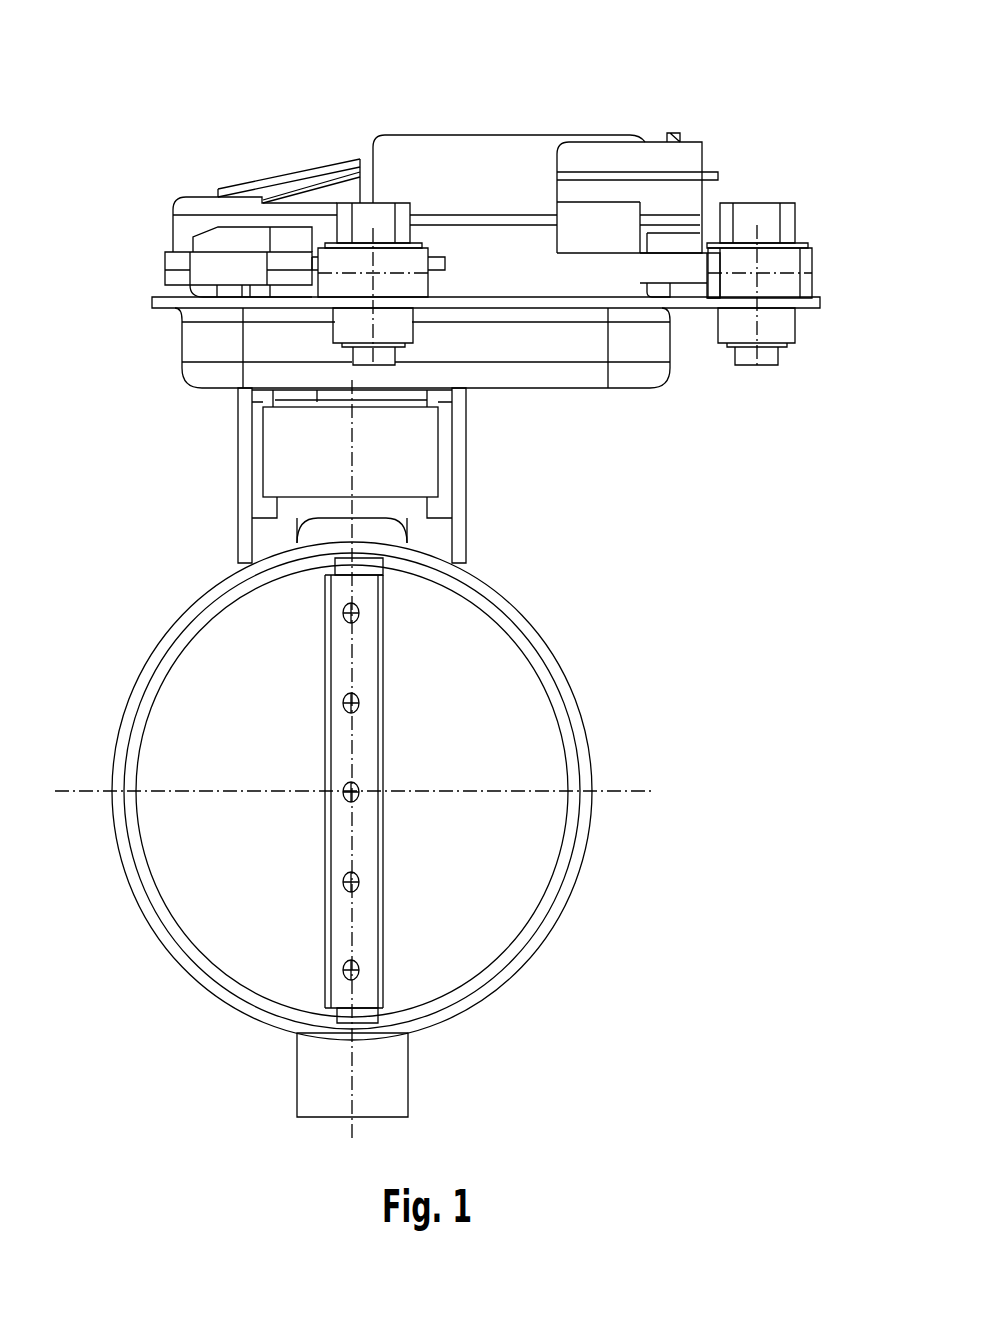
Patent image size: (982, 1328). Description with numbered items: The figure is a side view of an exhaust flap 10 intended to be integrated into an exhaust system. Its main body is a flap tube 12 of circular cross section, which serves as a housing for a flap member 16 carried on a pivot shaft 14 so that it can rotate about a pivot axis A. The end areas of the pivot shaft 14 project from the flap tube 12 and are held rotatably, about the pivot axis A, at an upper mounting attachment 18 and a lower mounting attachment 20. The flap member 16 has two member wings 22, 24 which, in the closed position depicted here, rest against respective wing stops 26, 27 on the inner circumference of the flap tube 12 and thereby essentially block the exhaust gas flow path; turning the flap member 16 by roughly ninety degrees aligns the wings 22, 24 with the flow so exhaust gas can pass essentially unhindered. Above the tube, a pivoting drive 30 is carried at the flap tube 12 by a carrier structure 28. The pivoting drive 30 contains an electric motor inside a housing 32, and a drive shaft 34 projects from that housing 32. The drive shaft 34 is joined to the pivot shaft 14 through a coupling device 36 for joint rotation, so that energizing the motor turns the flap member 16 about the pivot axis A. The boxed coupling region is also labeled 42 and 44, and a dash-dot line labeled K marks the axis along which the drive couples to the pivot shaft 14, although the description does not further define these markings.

The exhaust flap 10 is at (646, 1047).
The flap tube 12 is at (575, 692).
The pivot shaft 14 is at (360, 1020).
The flap member 16 is at (337, 789).
The mounting attachment 18 is at (410, 528).
The mounting attachment 20 is at (330, 1080).
The member wing 22 is at (177, 835).
The member wing 24 is at (522, 870).
The wing stop 26 is at (168, 660).
The wing stop 27 is at (568, 773).
The carrier structure 28 is at (470, 538).
The pivoting drive 30 is at (472, 126).
The housing 32 is at (702, 155).
The drive shaft 34 is at (373, 400).
The coupling device 36 is at (206, 458).
The coupling device 42 is at (342, 405).
The coupling shaft 44 is at (327, 498).
The pivot axis A is at (352, 647).
The coupling axis K is at (378, 532).